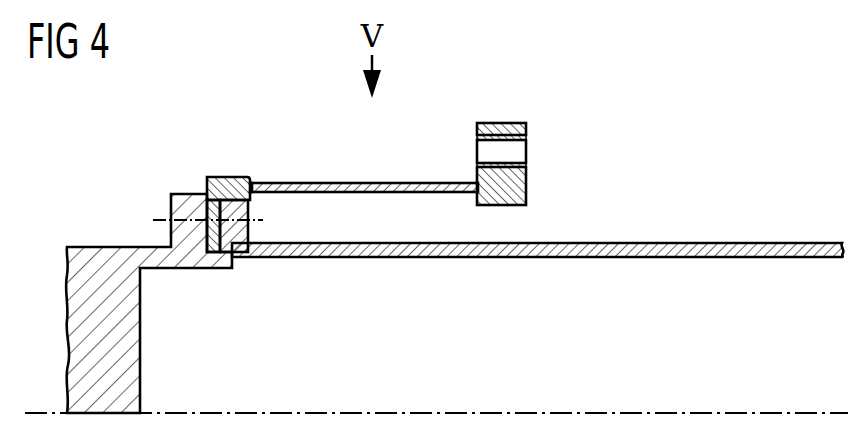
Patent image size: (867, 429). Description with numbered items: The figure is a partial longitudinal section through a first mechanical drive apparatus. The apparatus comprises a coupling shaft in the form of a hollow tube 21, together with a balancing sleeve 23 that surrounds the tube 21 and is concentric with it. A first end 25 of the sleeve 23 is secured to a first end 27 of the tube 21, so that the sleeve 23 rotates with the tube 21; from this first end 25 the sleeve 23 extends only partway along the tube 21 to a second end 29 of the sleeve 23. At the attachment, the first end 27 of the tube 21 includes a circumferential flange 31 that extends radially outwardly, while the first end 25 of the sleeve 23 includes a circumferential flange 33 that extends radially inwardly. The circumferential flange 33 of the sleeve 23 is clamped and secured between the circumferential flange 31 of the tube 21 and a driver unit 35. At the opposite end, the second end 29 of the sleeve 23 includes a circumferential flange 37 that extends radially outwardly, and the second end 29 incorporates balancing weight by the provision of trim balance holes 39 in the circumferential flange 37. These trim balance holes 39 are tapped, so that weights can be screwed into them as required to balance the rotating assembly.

The hollow tube 21 is at (727, 242).
The balancing sleeve 23 is at (312, 156).
The first end of sleeve 25 is at (229, 177).
The first end of tube 27 is at (237, 242).
The second end of sleeve 29 is at (519, 202).
The circumferential flange of tube 31 is at (246, 225).
The circumferential flange of sleeve 33 is at (210, 253).
The driver unit 35 is at (130, 360).
The circumferential flange of second end of sleeve 37 is at (503, 123).
The trim balance holes 39 is at (520, 150).